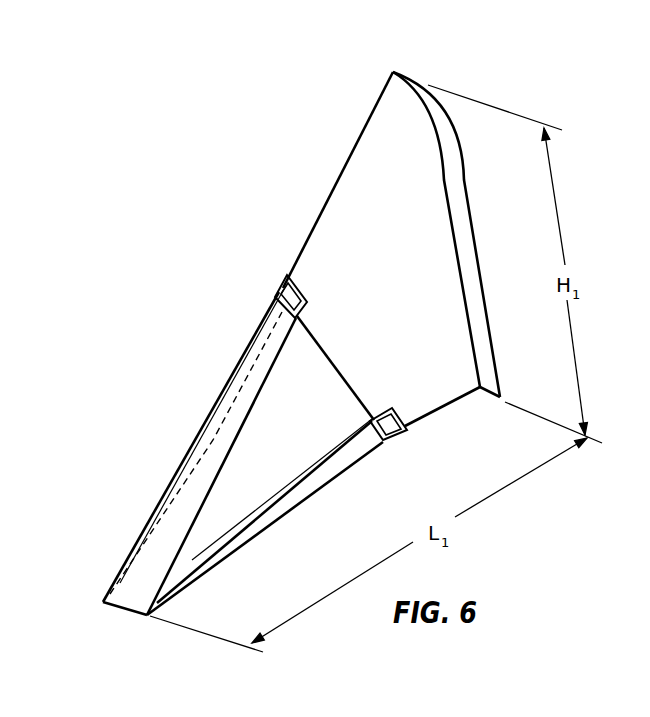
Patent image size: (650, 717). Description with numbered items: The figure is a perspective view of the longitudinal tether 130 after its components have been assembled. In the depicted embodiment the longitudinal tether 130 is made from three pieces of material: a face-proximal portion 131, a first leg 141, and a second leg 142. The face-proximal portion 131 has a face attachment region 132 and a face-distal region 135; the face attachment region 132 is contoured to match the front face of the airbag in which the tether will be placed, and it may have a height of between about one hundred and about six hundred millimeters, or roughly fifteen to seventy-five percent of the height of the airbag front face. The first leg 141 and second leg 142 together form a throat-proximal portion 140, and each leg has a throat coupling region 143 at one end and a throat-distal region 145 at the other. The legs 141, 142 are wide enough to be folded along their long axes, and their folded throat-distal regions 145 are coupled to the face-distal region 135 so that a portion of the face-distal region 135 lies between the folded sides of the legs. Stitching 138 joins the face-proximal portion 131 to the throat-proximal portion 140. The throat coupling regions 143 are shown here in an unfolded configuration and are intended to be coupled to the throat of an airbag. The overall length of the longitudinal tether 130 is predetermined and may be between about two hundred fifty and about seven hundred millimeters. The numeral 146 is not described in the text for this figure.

The longitudinal tether 130 is at (312, 128).
The face-proximal portion 131 is at (400, 127).
The face attachment region 132 is at (457, 178).
The face-distal region 135 is at (340, 327).
The stitching 138 is at (280, 284).
The throat-proximal portion 140 is at (150, 426).
The first leg 141 is at (182, 512).
The second leg 142 is at (317, 478).
The throat coupling region 143 is at (147, 580).
The throat-distal region 145 is at (288, 299).
The strut flange 146 is at (243, 357).